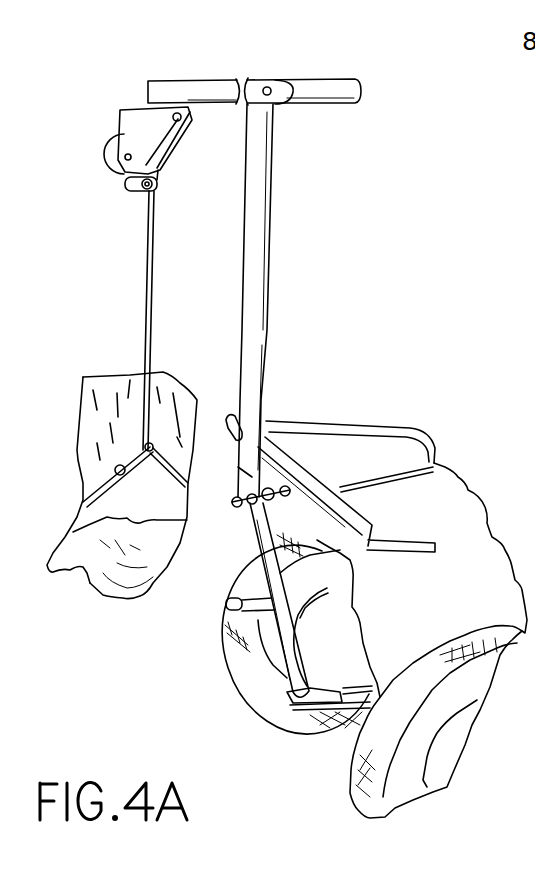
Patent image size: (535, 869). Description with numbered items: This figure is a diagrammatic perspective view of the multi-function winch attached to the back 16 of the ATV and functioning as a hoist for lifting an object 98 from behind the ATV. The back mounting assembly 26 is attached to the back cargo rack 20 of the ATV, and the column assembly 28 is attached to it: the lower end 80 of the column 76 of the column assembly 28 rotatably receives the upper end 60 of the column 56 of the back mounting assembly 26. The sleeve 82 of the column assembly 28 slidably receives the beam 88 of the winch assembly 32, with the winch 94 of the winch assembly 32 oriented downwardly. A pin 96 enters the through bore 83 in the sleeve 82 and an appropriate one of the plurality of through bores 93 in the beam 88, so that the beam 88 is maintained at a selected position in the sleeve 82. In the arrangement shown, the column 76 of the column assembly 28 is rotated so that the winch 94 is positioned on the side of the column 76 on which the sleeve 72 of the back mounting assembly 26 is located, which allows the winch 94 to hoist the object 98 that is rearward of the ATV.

The back of the ATV 16 is at (297, 737).
The back cargo rack 20 is at (313, 448).
The back mounting assembly 26 is at (252, 701).
The column assembly 28 is at (318, 300).
The winch assembly 32 is at (274, 56).
The column of the back mounting assembly 56 is at (283, 655).
The upper end of the column of the back mounting assembly 60 is at (268, 457).
The sleeve of the back mounting assembly 72 is at (230, 610).
The column of the column assembly 76 is at (272, 244).
The lower end of the column of the column assembly 80 is at (235, 506).
The sleeve of the column assembly 82 is at (238, 79).
The through bore in the sleeve 83 is at (342, 65).
The beam of the winch assembly 88 is at (169, 83).
The plurality of through bores in the beam 93 is at (271, 87).
The winch 94 is at (107, 154).
The pin 96 is at (342, 65).
The object 98 is at (83, 583).